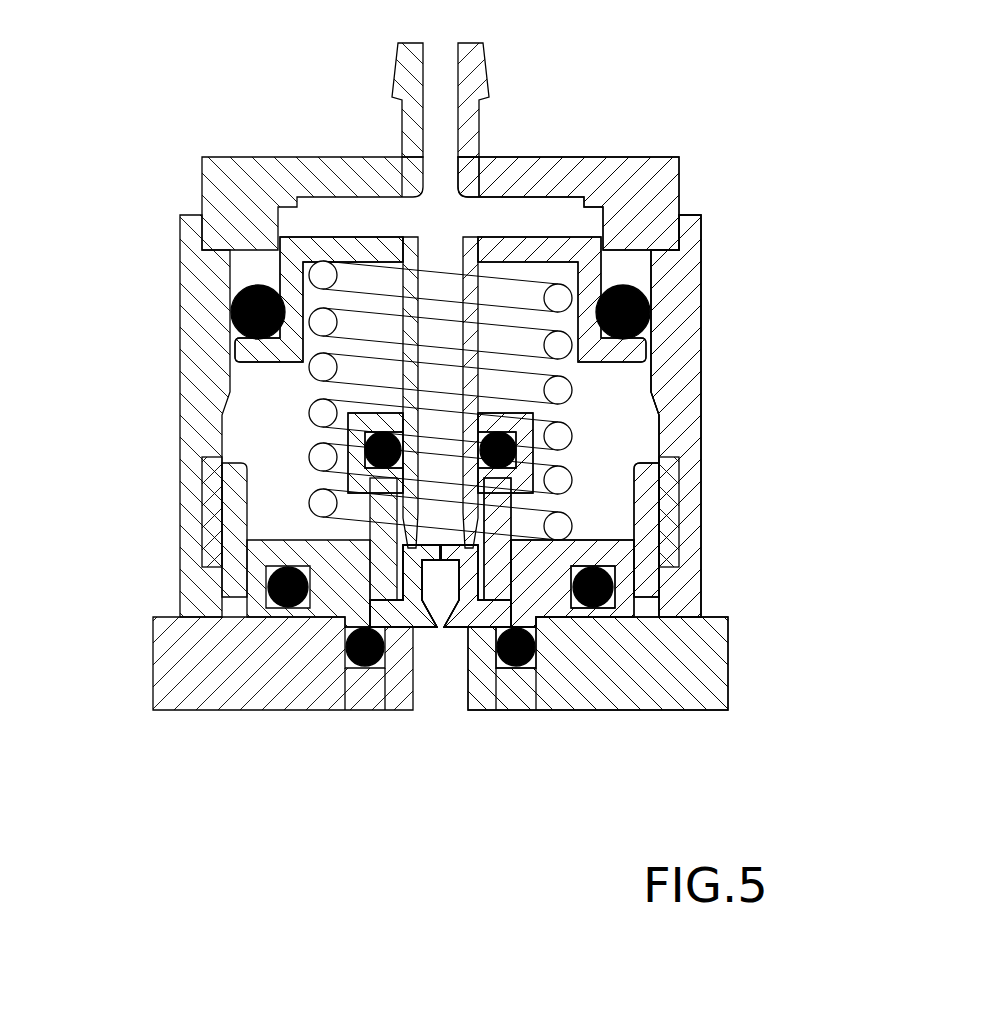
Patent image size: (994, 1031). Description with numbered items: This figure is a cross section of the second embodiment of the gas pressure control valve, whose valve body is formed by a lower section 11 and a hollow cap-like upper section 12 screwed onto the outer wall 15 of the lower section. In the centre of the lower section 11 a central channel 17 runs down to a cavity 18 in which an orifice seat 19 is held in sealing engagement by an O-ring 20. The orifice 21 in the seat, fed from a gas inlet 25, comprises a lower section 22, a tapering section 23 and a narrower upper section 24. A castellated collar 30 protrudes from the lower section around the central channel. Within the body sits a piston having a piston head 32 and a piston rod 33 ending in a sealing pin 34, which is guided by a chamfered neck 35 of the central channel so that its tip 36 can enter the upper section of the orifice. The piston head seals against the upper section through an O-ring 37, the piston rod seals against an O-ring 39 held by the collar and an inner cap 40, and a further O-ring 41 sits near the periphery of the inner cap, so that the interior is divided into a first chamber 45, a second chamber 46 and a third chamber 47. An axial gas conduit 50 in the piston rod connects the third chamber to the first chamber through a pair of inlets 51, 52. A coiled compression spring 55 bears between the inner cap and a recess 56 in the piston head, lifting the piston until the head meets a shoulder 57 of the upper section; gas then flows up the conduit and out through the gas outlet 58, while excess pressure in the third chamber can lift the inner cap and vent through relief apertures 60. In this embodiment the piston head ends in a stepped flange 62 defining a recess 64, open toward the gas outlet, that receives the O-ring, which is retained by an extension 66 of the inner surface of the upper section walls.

The lower section of the valve body 11 is at (690, 700).
The upper section of the valve body 12 is at (693, 355).
The outer wall 15 is at (677, 555).
The central channel 17 is at (537, 643).
The cavity 18 is at (445, 622).
The orifice seat 19 is at (493, 690).
The O-ring 20 is at (575, 692).
The orifice 21 is at (447, 692).
The lower section of the orifice 22 is at (460, 677).
The tapering section of the orifice 23 is at (447, 658).
The upper section of the orifice 24 is at (440, 650).
The gas inlet 25 is at (432, 713).
The castellated collar 30 is at (545, 512).
The piston head 32 is at (438, 318).
The piston rod 33 is at (300, 295).
The sealing pin 34 is at (420, 620).
The chamfered neck 35 is at (268, 585).
The tip of the sealing pin 36 is at (447, 627).
The O-ring 37 is at (237, 325).
The O-ring 39 is at (500, 452).
The inner cap 40 is at (350, 495).
The O-ring 41 is at (660, 593).
The first chamber 45 is at (530, 230).
The second chamber 46 is at (440, 332).
The third chamber 47 is at (395, 590).
The axial gas conduit 50 is at (410, 362).
The inlet 51 is at (400, 530).
The inlet 52 is at (480, 530).
The coiled compression spring 55 is at (352, 495).
The recess 56 is at (632, 230).
The shoulder 57 is at (520, 302).
The gas outlet 58 is at (440, 145).
The relief apertures 60 is at (252, 495).
The stepped flange 62 is at (643, 318).
The recess 64 is at (653, 305).
The extension 66 is at (645, 273).